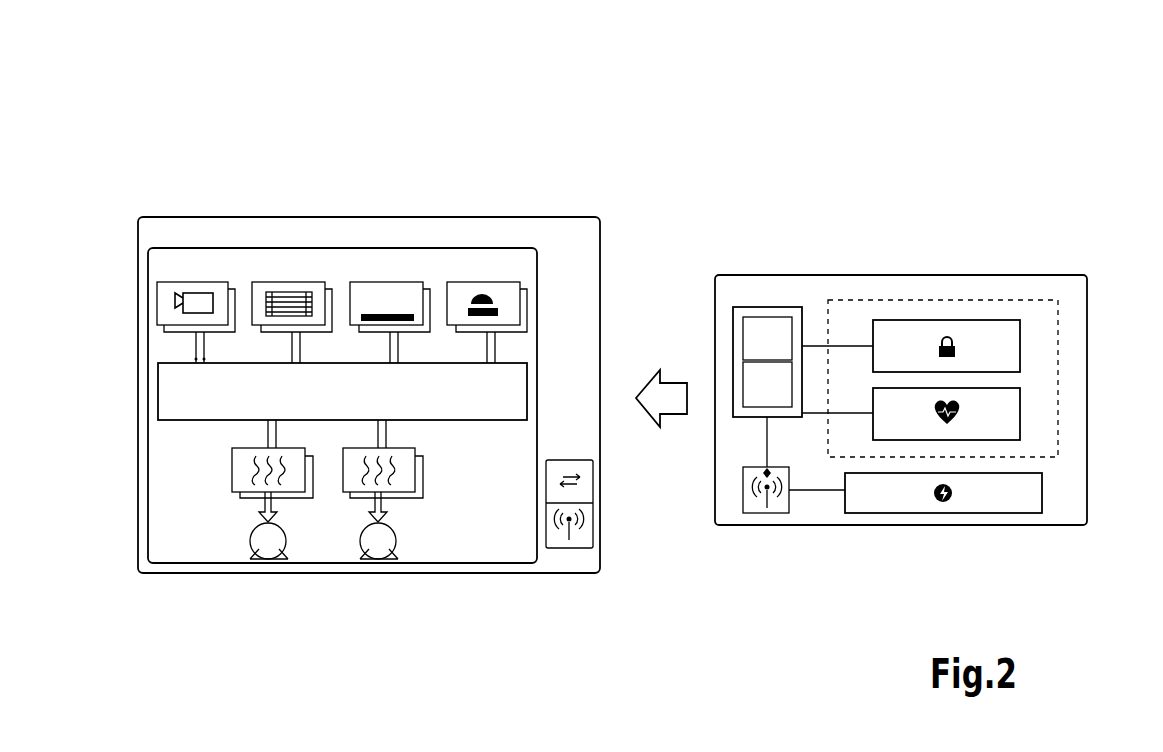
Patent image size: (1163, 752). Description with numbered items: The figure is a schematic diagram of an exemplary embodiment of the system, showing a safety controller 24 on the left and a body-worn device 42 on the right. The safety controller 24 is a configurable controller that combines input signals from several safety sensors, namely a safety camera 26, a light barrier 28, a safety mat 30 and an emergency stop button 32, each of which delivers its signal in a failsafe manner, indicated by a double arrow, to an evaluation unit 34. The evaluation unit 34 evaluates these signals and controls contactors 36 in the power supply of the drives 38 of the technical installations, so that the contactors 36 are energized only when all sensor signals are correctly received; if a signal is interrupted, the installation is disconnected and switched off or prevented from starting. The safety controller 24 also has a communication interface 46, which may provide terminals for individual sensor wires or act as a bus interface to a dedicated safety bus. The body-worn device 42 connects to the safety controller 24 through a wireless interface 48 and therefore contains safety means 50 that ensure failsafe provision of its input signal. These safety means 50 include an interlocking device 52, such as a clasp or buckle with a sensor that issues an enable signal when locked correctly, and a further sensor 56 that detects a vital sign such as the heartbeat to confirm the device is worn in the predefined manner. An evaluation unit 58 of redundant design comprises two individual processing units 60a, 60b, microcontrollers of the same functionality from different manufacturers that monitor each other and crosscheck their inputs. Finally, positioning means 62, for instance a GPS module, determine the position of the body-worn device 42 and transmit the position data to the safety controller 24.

The safety controller 24 is at (432, 102).
The safety camera 26 is at (194, 292).
The light barrier 28 is at (287, 290).
The safety mat 30 is at (388, 296).
The emergency stop button 32 is at (505, 296).
The evaluation unit 34 is at (178, 396).
The contactor 36 is at (242, 474).
The drive 38 is at (381, 550).
The body-worn device 42 is at (932, 102).
The communication interface 46 is at (586, 546).
The wireless interface 48 is at (779, 506).
The safety means 50 is at (1012, 300).
The interlocking device 52 is at (1005, 349).
The further sensor 56 is at (1005, 415).
The evaluation unit 58 is at (790, 307).
The individual processing unit 60a is at (750, 318).
The individual processing unit 60b is at (745, 399).
The positioning means 62 is at (1012, 504).